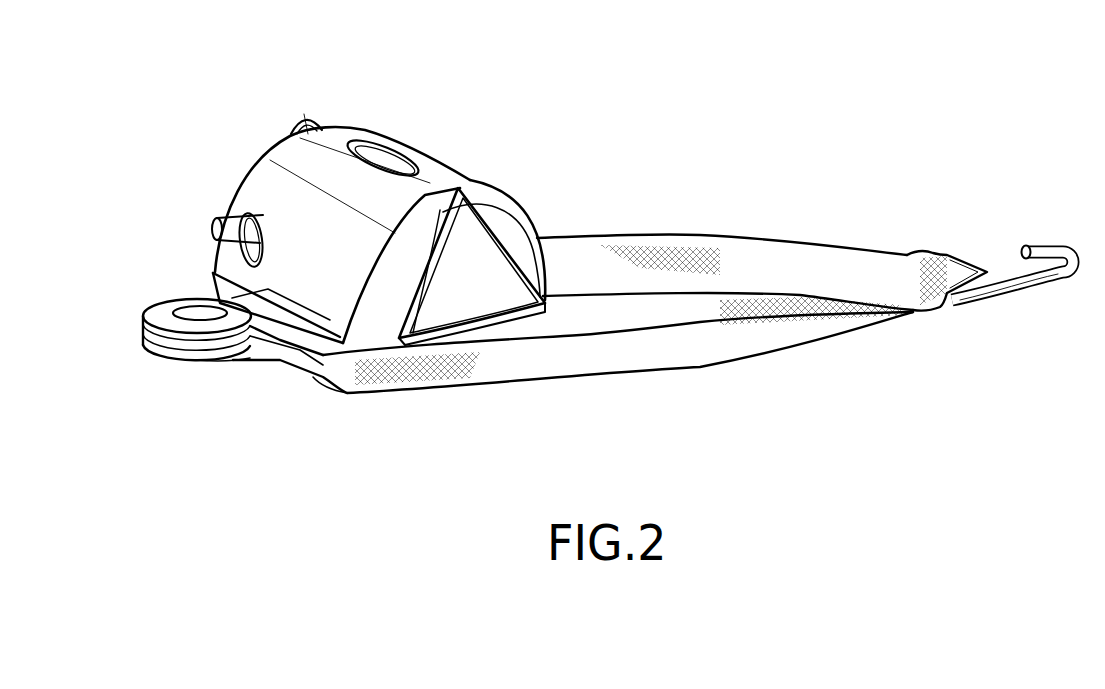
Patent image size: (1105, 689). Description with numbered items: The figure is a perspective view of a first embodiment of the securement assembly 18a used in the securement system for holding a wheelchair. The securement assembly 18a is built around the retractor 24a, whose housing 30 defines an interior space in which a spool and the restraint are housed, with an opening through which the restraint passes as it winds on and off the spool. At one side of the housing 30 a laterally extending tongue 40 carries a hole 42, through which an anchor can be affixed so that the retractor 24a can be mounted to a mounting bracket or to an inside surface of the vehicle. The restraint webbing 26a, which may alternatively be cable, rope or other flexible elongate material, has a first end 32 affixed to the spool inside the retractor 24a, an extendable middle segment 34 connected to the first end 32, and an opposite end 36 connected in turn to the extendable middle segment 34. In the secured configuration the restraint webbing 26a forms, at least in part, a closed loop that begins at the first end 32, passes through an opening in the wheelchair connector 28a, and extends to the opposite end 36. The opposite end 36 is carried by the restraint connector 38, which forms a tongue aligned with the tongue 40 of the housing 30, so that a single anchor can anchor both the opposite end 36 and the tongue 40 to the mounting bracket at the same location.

The securement assembly 18a is at (177, 125).
The housing 30 is at (379, 130).
The retractor 24a is at (464, 188).
The first end 32 is at (560, 238).
The restraint webbing 26a is at (752, 200).
The extendable middle segment 34 is at (931, 263).
The wheelchair connector 28a is at (993, 286).
The hole 42 is at (200, 315).
The tongue 40 is at (143, 328).
The restraint connector 38 is at (254, 367).
The opposite end 36 is at (387, 395).